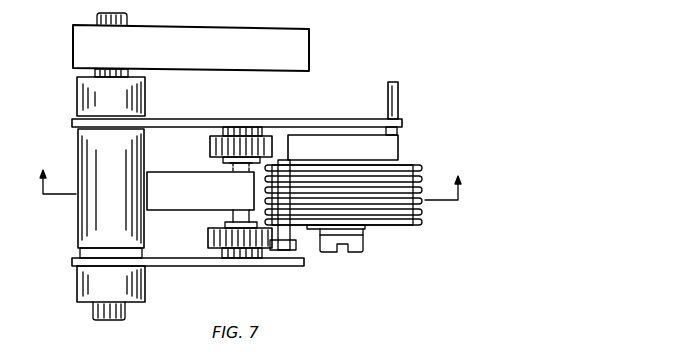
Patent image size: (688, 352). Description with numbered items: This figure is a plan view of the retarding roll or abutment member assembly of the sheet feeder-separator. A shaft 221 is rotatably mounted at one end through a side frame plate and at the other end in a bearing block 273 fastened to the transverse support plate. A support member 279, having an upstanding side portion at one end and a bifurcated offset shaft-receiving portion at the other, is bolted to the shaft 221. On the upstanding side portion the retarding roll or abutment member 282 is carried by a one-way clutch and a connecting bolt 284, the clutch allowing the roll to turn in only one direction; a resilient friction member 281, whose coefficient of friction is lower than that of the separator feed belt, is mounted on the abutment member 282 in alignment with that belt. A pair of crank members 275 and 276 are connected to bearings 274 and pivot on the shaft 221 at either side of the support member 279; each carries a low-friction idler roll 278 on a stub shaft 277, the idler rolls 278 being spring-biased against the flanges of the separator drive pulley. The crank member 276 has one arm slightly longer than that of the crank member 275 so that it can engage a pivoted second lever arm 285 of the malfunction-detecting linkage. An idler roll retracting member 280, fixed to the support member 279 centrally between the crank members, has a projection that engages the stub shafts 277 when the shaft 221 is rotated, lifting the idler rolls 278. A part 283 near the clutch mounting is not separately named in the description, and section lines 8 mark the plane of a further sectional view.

The section line 8- 8 is at (250, 175).
The shaft 221 is at (127, 310).
The bearing block 273 is at (310, 45).
The bearings 274 is at (145, 88).
The crank member 275 is at (298, 266).
The crank member 276 is at (272, 119).
The stub shafts 277 is at (233, 166).
The idler rolls 278 is at (210, 146).
The support member 279 is at (78, 226).
The idler roll retracting member 280 is at (203, 212).
The friction member 281 is at (423, 209).
The retarding roll or abutment member 282 is at (410, 165).
The base plate 283 is at (376, 229).
The connecting bolt 284 is at (357, 249).
The second lever arm 285 is at (398, 90).